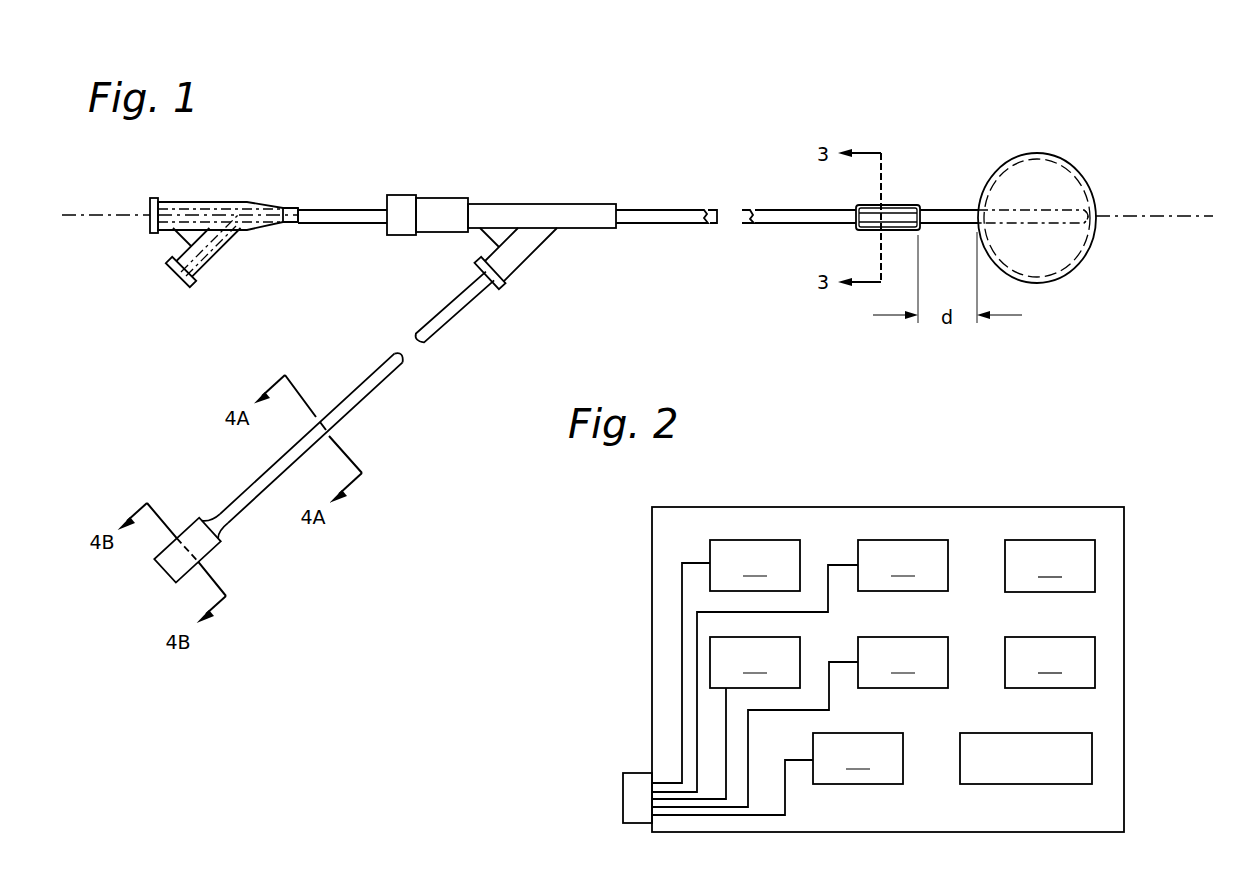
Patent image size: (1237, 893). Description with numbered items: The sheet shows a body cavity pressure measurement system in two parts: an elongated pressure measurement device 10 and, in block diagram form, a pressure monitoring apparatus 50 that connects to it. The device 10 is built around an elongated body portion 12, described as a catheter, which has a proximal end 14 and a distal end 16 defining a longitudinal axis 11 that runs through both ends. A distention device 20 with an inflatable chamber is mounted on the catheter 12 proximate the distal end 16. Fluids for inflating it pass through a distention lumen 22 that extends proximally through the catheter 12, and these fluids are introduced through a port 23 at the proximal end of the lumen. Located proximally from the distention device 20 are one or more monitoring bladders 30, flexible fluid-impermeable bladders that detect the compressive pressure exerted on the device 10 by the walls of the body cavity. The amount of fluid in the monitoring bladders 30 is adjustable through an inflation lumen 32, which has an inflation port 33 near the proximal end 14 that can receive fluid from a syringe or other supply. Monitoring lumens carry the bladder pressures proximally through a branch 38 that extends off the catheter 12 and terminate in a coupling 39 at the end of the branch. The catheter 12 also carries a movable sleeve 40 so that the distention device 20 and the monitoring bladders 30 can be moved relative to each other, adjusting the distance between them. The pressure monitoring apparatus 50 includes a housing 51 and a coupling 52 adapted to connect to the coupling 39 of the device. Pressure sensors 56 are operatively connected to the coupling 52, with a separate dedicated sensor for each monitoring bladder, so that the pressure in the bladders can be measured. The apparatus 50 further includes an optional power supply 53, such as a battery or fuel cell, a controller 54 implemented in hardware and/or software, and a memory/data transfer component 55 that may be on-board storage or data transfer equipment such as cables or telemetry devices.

In FIG. 1, the pressure measurement device 10 is at (710, 136).
In FIG. 1, the longitudinal axis 11 is at (75, 216).
In FIG. 1, the elongated body portion 12 is at (357, 223).
In FIG. 1, the proximal end 14 is at (298, 208).
In FIG. 1, the distal end 16 is at (1096, 216).
In FIG. 1, the distention device 20 is at (1052, 153).
In FIG. 1, the distention lumen 22 is at (188, 203).
In FIG. 1, the port 23 is at (148, 205).
In FIG. 1, the monitoring bladder 30 is at (898, 205).
In FIG. 1, the inflation lumen 32 is at (217, 268).
In FIG. 1, the inflation port 33 is at (175, 278).
In FIG. 1, the branch 38 is at (365, 400).
In FIG. 1, the coupling 39 is at (193, 521).
In FIG. 1, the movable sleeve 40 is at (588, 204).
In FIG. 2, the pressure monitoring apparatus 50 is at (984, 473).
In FIG. 2, the housing 51 is at (815, 507).
In FIG. 2, the coupling 52 is at (636, 773).
In FIG. 2, the power supply 53 is at (1089, 733).
In FIG. 2, the controller 54 is at (1050, 566).
In FIG. 2, the memory/data transfer component 55 is at (1050, 662).
In FIG. 2, the pressure sensor 56 is at (829, 662).